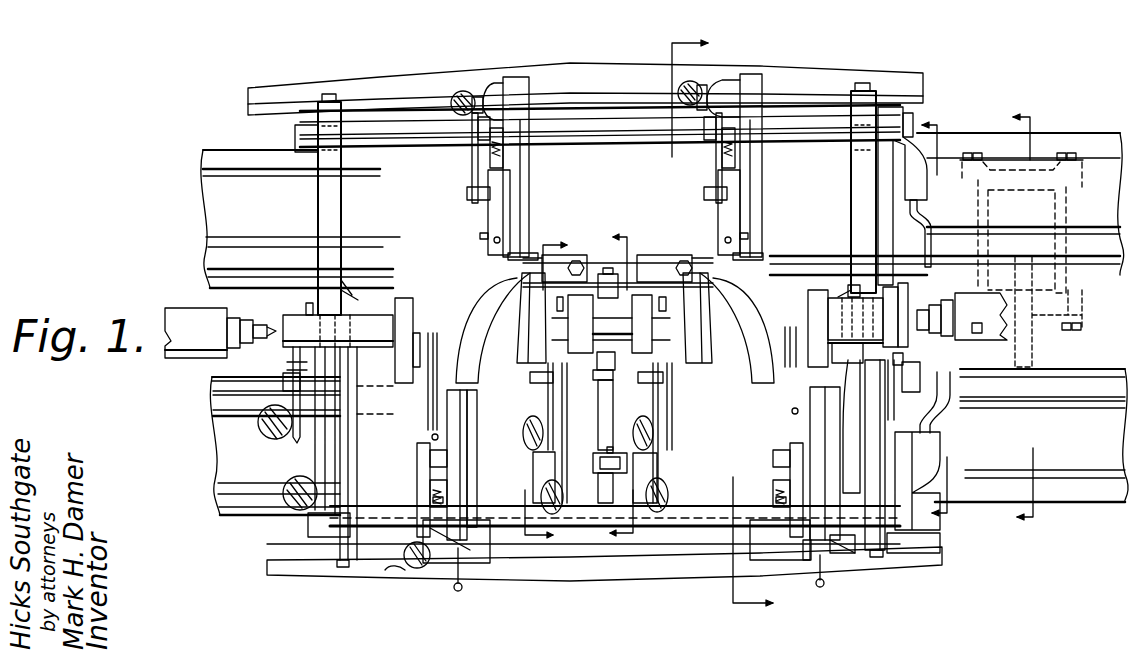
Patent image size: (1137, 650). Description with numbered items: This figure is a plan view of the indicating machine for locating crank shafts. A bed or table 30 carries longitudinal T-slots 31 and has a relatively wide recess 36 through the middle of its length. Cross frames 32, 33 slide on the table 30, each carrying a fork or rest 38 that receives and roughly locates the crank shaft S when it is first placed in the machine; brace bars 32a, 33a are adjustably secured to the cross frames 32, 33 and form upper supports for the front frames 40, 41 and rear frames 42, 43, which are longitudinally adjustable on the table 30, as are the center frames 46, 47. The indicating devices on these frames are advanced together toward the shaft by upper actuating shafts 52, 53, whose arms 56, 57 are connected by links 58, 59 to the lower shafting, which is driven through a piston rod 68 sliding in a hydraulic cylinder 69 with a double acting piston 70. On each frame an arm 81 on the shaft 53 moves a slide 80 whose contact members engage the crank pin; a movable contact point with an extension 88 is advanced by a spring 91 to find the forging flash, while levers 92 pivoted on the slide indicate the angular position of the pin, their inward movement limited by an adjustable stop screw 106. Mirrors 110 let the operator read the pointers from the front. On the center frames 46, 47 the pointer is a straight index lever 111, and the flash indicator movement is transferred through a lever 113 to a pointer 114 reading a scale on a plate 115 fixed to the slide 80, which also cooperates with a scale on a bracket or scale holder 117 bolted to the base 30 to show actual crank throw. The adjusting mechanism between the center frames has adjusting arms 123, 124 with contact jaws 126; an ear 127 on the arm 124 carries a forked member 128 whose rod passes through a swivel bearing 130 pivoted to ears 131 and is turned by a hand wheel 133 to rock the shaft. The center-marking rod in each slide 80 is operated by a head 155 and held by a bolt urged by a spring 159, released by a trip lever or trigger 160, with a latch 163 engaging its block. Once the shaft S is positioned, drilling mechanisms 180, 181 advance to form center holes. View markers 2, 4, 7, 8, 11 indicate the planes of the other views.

The section line 2 is at (1032, 319).
The section line 4 is at (942, 320).
The section line 7 is at (722, 331).
The section line 8 is at (539, 380).
The section line / shaft 11 is at (618, 392).
The bed or table 30 is at (203, 207).
The longitudinal T-slots 31 is at (262, 146).
The cross frame 32 is at (851, 212).
The brace bar 32a is at (600, 582).
The cross frame 33 is at (318, 208).
The brace bar 33a is at (586, 58).
The recess 36 is at (580, 325).
The fork or rest 38 is at (350, 297).
The front frame 40 is at (825, 463).
The front frame 41 is at (465, 418).
The rear frame 42 is at (777, 186).
The rear frame 43 is at (530, 201).
The center frame 46 is at (654, 263).
The center frame 47 is at (562, 262).
The upper actuating shaft 52 is at (612, 141).
The upper actuating shaft 53 is at (308, 526).
The arm 56 is at (923, 193).
The arm 57 is at (935, 458).
The link 58 is at (931, 243).
The link 59 is at (950, 385).
The piston rod 68 is at (1028, 346).
The hydraulic cylinder 69 is at (1066, 274).
The double acting piston 70 is at (1068, 213).
The slide 80 is at (352, 360).
The arm 81 is at (474, 173).
The extension 88 is at (488, 216).
The spring 91 is at (433, 500).
The lever 92 is at (609, 351).
The adjustable stop screw 106 is at (494, 240).
The mirror 110 is at (458, 96).
The pointer or index lever 111 is at (567, 410).
The lever 113 is at (290, 362).
The pointer 114 is at (292, 404).
The plate 115 is at (686, 414).
The bracket or scale holder 117 is at (533, 468).
The adjusting arm 123 is at (612, 283).
The adjusting arm 124 is at (615, 360).
The contact jaws 126 is at (617, 338).
The ear 127 is at (594, 376).
The forked member 128 is at (598, 430).
The swivel bearing 130 is at (610, 463).
The ears 131 is at (607, 450).
The hand wheel 133 is at (600, 488).
The head 155 is at (458, 591).
The spring 159 is at (807, 561).
The trip lever or trigger 160 is at (586, 549).
The latch 163 is at (845, 557).
The drilling mechanism 180 is at (212, 362).
The drilling mechanism 181 is at (962, 341).
The crank shaft S is at (463, 308).